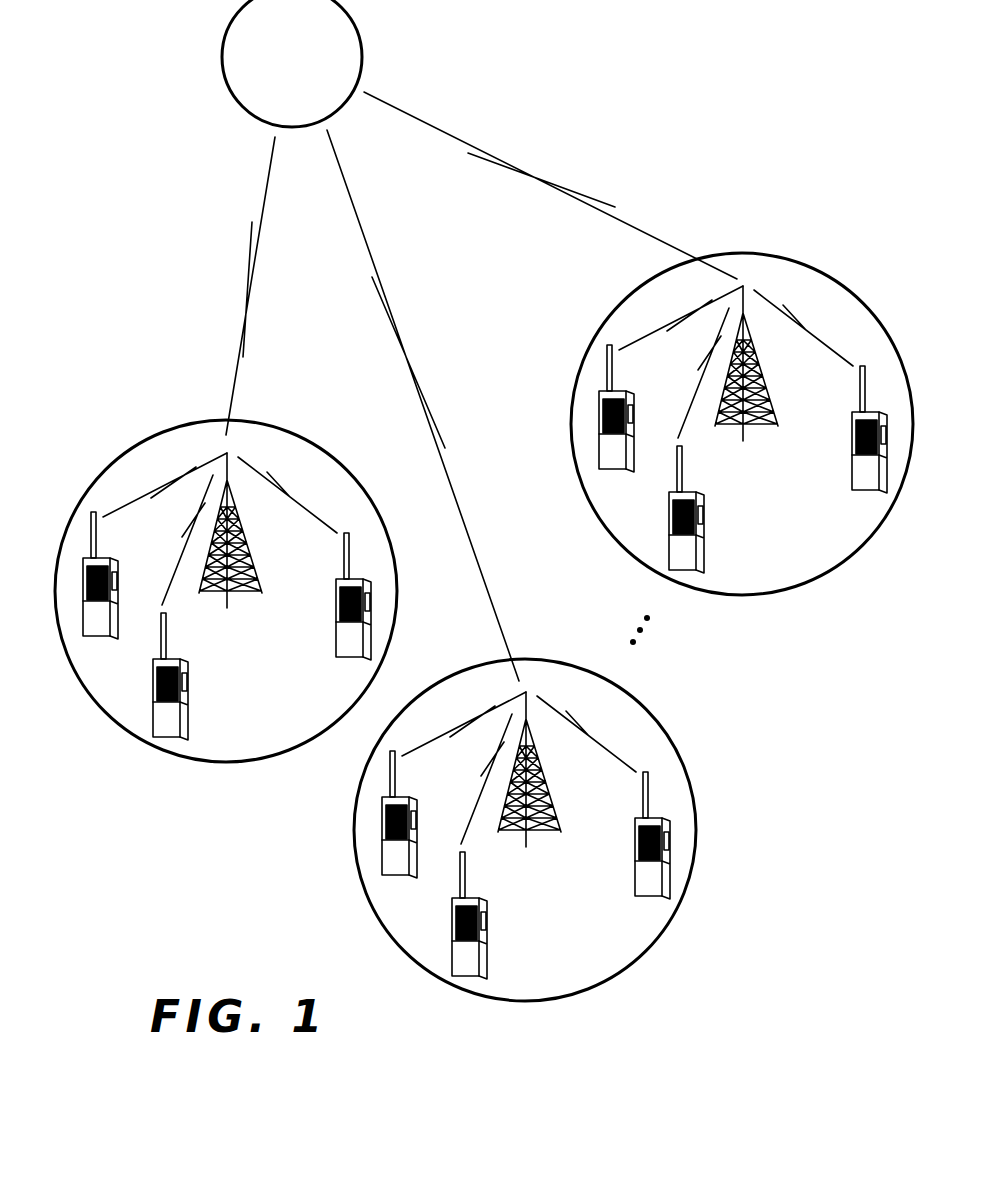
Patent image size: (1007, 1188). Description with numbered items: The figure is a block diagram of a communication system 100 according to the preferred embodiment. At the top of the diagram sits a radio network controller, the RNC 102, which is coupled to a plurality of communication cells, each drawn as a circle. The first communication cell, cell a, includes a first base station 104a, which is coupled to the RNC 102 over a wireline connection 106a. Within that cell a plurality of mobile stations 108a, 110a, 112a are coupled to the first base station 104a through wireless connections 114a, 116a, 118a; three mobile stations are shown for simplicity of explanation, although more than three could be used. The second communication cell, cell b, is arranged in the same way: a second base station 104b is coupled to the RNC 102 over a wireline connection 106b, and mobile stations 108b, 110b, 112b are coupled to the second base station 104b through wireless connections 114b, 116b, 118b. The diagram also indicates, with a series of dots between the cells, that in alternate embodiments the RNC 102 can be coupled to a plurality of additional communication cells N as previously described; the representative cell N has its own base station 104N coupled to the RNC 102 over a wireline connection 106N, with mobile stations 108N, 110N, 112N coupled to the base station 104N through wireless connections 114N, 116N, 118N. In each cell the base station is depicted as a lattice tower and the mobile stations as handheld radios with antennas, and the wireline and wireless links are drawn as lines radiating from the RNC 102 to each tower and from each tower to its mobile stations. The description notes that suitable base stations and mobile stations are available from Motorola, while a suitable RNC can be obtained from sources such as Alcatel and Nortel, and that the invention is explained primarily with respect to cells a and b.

The communication system 100 is at (265, 959).
The RNC 102 is at (232, 95).
The first base station (BTS) 104a is at (262, 530).
The second base station (BTS) 104b is at (561, 769).
The base station (BTS) 104N is at (779, 363).
The wireline connection 106a is at (248, 266).
The wireline connection 106b is at (392, 304).
The wireline connection 106N is at (523, 168).
The mobile station (MS) 108a is at (330, 612).
The mobile station (MS) 108b is at (629, 851).
The mobile station (MS) 108N is at (845, 445).
The mobile station (MS) 110a is at (201, 676).
The mobile station (MS) 110b is at (500, 915).
The mobile station (MS) 110N is at (717, 509).
The mobile station (MS) 112a is at (107, 593).
The mobile station (MS) 112b is at (406, 832).
The mobile station (MS) 112N is at (623, 426).
The wireless connection 114a is at (287, 493).
The wireless connection 114b is at (586, 732).
The wireless connection 114N is at (803, 326).
The wireless connection 116a is at (168, 540).
The wireless connection 116b is at (467, 779).
The wireless connection 116N is at (683, 373).
The wireless connection 118a is at (165, 485).
The wireless connection 118b is at (464, 724).
The wireless connection 118N is at (681, 318).